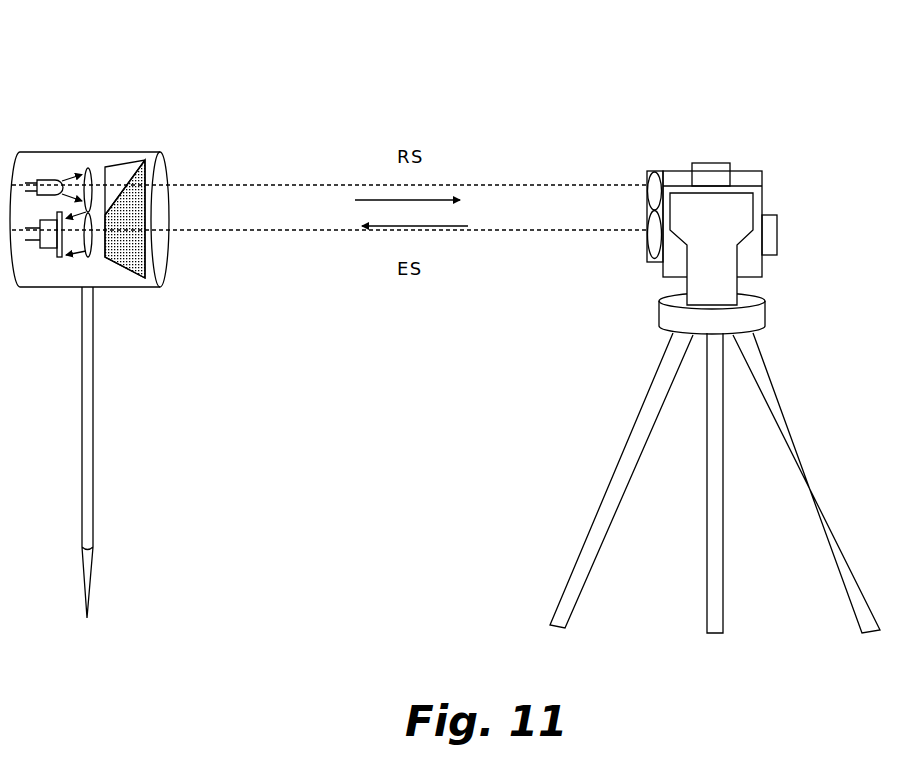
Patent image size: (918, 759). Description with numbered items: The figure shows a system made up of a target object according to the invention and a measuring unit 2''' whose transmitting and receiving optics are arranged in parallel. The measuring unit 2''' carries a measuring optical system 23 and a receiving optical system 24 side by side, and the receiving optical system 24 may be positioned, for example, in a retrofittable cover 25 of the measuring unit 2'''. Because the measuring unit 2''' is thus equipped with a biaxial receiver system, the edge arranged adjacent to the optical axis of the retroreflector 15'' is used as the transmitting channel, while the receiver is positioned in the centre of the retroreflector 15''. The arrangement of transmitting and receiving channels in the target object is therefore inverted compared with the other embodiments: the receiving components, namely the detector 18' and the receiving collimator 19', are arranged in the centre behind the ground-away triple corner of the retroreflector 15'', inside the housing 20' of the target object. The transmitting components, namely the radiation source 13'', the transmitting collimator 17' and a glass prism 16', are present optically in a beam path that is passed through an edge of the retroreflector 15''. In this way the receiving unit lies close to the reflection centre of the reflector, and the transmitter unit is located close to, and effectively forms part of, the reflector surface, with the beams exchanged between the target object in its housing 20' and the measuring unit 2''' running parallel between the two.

The radiation source 13'' is at (142, 118).
The transmitting collimator 17' is at (154, 165).
The glass prism 16' is at (174, 194).
The retroreflector 15'' is at (200, 230).
The receiving collimator 19' is at (151, 278).
The detector 18' is at (135, 302).
The housing 20' is at (127, 385).
The retrofittable cover 25 is at (678, 182).
The receiving optical system 24 is at (650, 180).
The measuring optical system 23 is at (655, 237).
The measuring unit 2''' is at (701, 413).